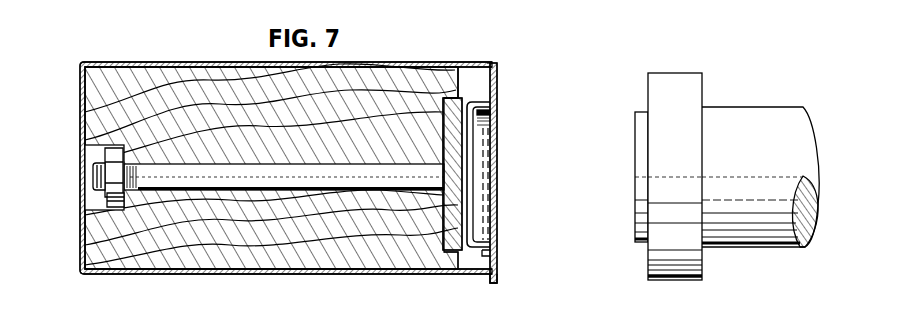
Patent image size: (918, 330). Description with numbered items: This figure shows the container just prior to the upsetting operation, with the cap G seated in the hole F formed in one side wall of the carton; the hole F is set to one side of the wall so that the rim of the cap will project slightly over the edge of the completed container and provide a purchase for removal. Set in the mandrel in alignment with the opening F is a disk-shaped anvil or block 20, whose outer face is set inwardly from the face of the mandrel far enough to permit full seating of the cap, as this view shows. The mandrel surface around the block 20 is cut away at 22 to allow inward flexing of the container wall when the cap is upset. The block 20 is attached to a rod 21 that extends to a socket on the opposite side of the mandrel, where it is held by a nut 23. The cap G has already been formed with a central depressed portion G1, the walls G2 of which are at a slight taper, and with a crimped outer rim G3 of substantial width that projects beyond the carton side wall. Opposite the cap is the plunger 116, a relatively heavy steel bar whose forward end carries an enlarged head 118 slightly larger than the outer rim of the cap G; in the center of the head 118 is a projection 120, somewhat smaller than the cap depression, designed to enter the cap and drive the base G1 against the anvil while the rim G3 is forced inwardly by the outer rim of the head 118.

The anvil block 20 is at (459, 96).
The rod 21 is at (317, 191).
The cut away portion 22 is at (480, 88).
The nut 23 is at (108, 197).
The cap G is at (475, 148).
The central depressed portion G1 is at (477, 206).
The walls of depressed portion G2 is at (490, 112).
The outer rim of the cap G3 is at (498, 277).
The hole F is at (498, 257).
The plunger 116 is at (763, 232).
The enlarged head 118 is at (668, 279).
The projection 120 is at (640, 226).